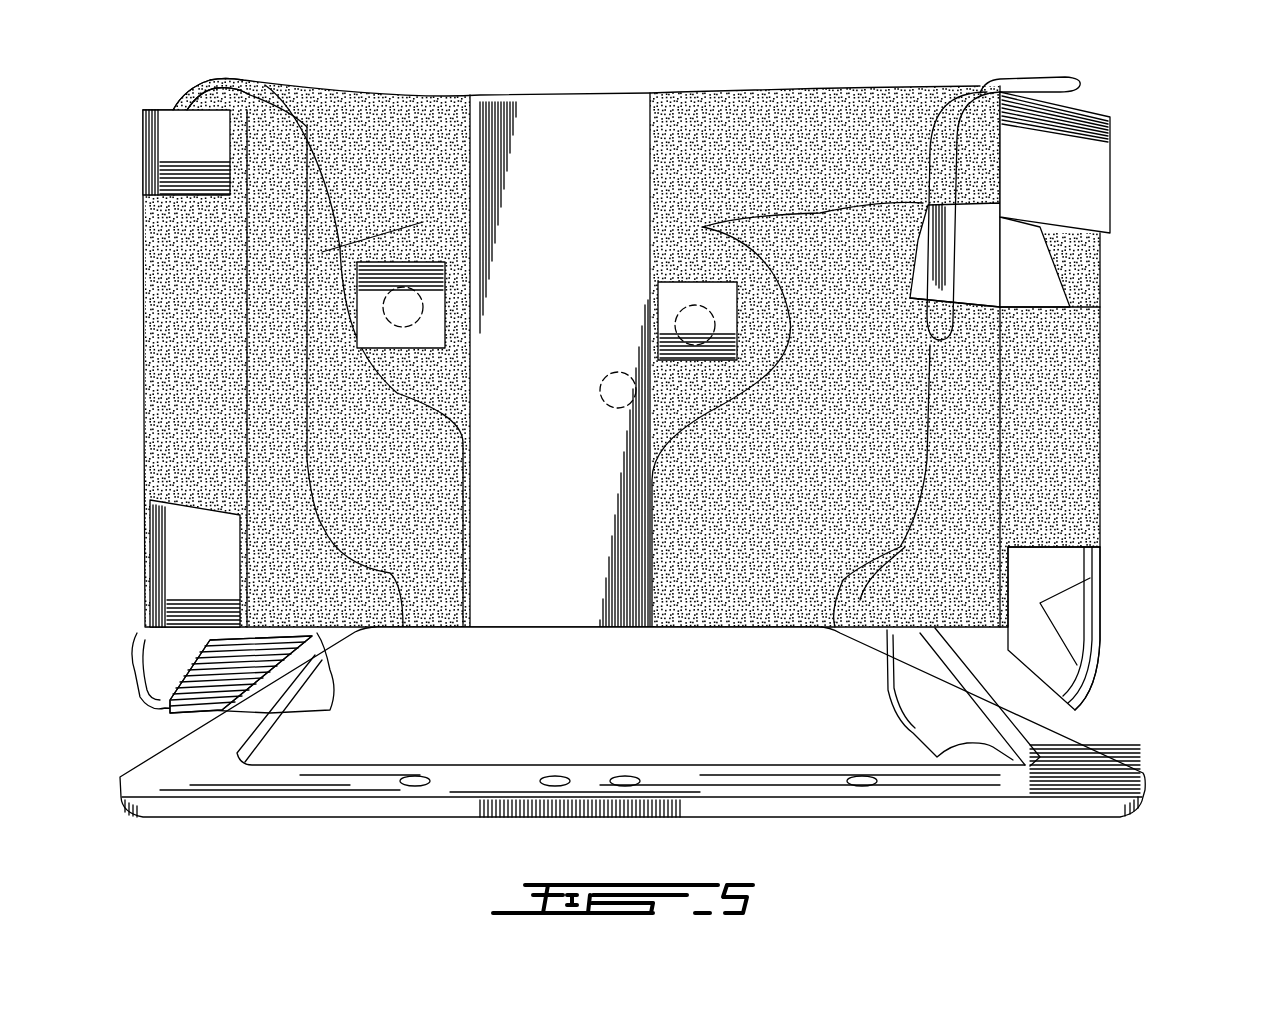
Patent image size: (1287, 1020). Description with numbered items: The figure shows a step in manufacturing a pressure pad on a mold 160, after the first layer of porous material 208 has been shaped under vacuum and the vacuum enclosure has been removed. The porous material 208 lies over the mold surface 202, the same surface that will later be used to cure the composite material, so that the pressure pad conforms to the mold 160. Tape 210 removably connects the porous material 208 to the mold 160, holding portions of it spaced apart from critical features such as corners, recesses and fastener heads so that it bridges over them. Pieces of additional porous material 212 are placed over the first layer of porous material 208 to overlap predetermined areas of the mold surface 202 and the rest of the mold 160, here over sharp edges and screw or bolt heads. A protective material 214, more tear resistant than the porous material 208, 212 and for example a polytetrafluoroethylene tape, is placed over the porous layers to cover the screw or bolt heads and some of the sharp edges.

The mold 160 is at (1124, 678).
The mold surface 202 is at (817, 232).
The porous material 208 is at (1043, 415).
The tape 210 is at (1058, 172).
The additional porous material 212 is at (321, 100).
The protective material 214 is at (690, 303).